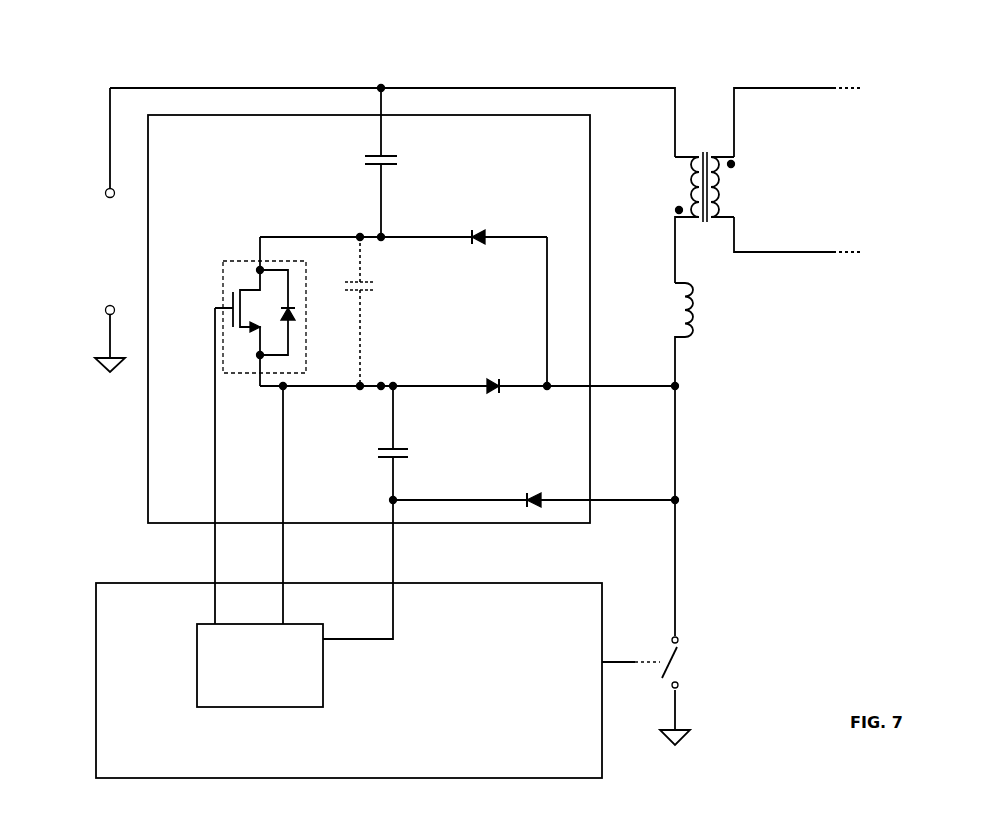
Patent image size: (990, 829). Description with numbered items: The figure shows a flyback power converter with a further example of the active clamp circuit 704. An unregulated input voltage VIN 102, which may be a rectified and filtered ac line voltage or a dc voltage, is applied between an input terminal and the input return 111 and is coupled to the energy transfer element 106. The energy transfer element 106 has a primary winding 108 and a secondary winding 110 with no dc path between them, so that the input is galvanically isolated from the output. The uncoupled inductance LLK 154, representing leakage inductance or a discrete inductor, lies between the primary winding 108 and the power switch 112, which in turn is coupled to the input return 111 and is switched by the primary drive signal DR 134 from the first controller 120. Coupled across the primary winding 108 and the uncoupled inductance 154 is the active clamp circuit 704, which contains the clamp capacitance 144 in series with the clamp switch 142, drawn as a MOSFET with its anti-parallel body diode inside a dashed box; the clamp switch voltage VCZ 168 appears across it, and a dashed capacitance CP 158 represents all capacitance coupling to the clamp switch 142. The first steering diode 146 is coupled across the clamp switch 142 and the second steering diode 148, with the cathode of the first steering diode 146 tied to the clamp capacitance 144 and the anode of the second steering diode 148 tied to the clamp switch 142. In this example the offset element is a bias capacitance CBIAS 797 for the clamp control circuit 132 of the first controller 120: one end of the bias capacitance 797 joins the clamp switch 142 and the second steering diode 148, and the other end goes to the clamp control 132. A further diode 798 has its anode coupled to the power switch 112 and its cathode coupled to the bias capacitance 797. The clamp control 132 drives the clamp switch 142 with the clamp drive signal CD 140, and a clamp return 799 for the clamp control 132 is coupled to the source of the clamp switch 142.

The input voltage VIN 102 is at (98, 236).
The energy transfer element T1 106 is at (738, 166).
The primary winding 108 is at (668, 153).
The secondary winding 110 is at (738, 186).
The input return 111 is at (110, 378).
The power switch S1 112 is at (700, 676).
The first controller 120 is at (160, 782).
The clamp control circuit 132 is at (192, 671).
The primary drive signal DR 134 is at (618, 668).
The clamp drive signal CD 140 is at (205, 556).
The clamp switch 142 is at (246, 377).
The clamp capacitance C1 144 is at (328, 160).
The steering diode D1 146 is at (500, 220).
The steering diode D2 148 is at (495, 362).
The uncoupled inductance LLK 154 is at (728, 313).
The capacitance CP2 158 is at (423, 291).
The clamp switch voltage VCZ 168 is at (337, 344).
The active clamp circuit 704 is at (142, 499).
The bias capacitance CBIAS 797 is at (368, 466).
The diode D4 798 is at (541, 470).
The clamp return 799 is at (290, 546).